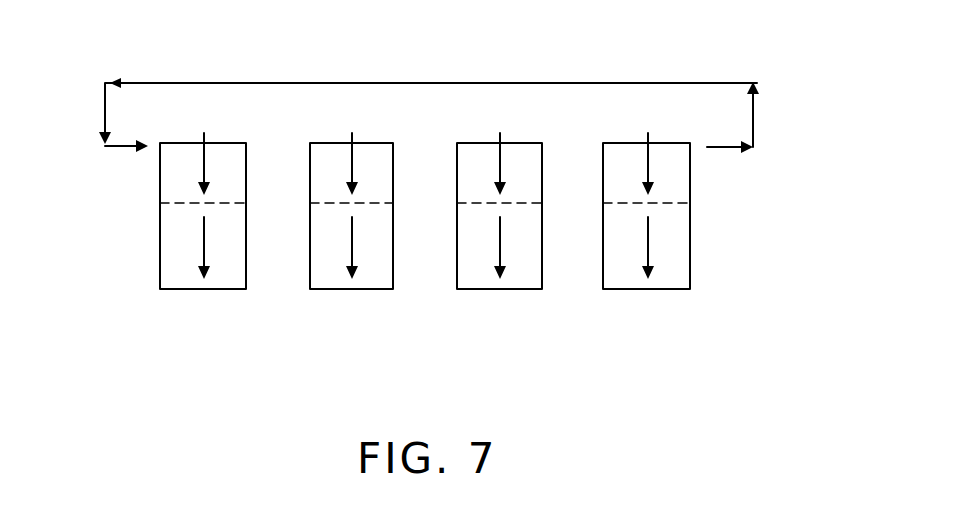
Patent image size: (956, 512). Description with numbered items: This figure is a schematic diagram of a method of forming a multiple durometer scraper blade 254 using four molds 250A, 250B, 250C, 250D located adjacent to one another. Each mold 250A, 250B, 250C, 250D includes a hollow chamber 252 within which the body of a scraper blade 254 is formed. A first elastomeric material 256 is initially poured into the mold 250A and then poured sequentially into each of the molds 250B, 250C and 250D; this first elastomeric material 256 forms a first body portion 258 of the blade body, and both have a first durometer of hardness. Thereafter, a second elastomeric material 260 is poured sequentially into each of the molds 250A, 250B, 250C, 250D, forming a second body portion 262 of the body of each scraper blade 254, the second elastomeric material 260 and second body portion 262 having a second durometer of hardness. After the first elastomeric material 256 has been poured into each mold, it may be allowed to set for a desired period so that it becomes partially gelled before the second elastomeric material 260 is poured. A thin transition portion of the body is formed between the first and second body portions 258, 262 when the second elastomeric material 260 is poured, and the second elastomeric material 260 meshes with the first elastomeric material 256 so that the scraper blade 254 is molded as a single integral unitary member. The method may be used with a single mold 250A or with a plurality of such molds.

The mold 250A is at (223, 290).
The mold 250B is at (378, 290).
The mold 250C is at (523, 290).
The mold 250D is at (682, 290).
The hollow chamber 252 is at (173, 230).
The multiple durometer scraper blade 254 is at (674, 225).
The first elastomeric material 256 is at (197, 248).
The first body portion 258 is at (227, 263).
The second elastomeric material 260 is at (203, 158).
The second body portion 262 is at (227, 155).